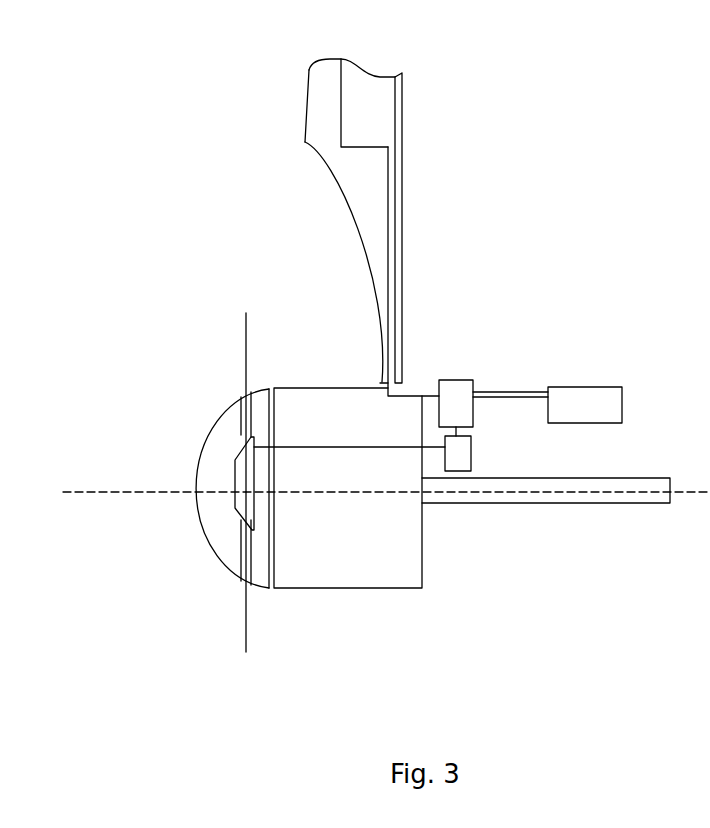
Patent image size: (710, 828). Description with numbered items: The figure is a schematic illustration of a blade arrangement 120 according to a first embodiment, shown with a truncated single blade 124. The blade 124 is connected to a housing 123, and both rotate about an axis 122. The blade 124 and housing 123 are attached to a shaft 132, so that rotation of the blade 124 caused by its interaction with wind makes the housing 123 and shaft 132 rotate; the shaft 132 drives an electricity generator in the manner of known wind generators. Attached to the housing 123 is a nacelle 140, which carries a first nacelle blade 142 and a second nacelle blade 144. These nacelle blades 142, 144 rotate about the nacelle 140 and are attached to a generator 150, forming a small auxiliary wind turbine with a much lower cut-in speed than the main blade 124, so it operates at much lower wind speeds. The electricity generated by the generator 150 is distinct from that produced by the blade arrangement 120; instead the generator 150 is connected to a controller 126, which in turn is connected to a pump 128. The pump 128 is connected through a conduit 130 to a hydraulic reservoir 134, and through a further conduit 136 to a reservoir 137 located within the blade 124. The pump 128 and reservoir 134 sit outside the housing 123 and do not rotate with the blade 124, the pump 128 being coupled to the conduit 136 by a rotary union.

The blade arrangement 120 is at (198, 172).
The axis 122 is at (100, 490).
The housing 123 is at (310, 388).
The blade 124 is at (357, 182).
The controller 126 is at (472, 457).
The pump 128 is at (457, 380).
The conduit 130 is at (522, 392).
The shaft 132 is at (617, 497).
The reservoir 134 is at (597, 387).
The conduit 136 is at (392, 233).
The reservoir 137 is at (388, 115).
The nacelle 140 is at (201, 416).
The first nacelle blade 142 is at (246, 352).
The second nacelle blade 144 is at (246, 612).
The generator 150 is at (235, 498).